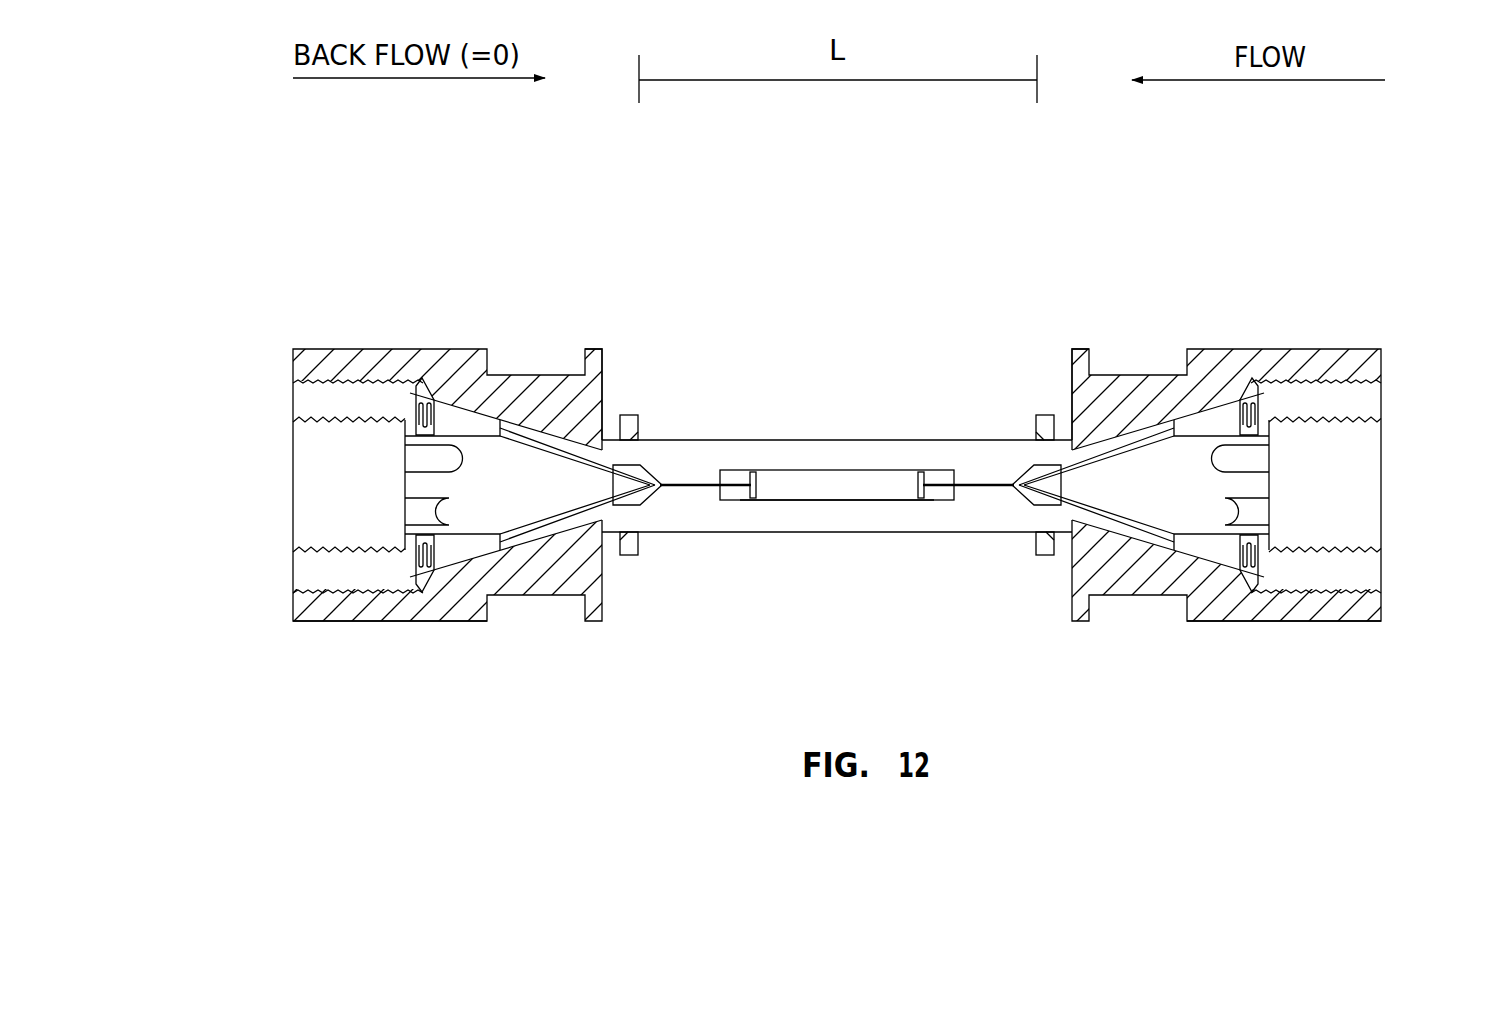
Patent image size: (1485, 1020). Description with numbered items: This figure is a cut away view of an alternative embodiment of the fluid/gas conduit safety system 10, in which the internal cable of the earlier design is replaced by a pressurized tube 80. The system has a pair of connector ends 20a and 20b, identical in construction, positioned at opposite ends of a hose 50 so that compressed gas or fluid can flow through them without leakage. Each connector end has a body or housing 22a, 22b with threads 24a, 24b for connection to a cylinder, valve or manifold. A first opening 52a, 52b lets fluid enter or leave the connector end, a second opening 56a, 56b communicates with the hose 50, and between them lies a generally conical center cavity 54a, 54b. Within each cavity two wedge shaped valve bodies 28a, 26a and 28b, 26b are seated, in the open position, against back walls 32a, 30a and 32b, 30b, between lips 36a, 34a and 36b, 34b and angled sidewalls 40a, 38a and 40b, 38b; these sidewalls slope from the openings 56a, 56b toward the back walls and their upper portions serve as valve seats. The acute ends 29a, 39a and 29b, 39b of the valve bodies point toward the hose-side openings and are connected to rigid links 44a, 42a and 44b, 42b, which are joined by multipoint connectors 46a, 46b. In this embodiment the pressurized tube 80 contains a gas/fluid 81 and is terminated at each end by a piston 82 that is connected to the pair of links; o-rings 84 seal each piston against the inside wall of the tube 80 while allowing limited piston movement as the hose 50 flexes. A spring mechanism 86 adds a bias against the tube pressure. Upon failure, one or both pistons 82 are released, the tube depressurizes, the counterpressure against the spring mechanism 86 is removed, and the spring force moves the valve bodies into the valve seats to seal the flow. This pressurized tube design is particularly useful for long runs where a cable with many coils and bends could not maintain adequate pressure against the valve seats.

The fluid/gas conduit safety system 10 is at (255, 254).
The connector end 20a is at (1381, 621).
The connector end 20b is at (293, 621).
The body or housing 22a is at (1334, 621).
The body or housing 22b is at (340, 621).
The threads 24a is at (1356, 549).
The threads 24b is at (318, 549).
The wedge shaped valve body 26a is at (1254, 585).
The wedge shaped valve body 26b is at (420, 585).
The wedge shaped valve body 28a is at (1227, 399).
The wedge shaped valve body 28b is at (447, 399).
The acute end of valve body 29a is at (1154, 482).
The acute end of valve body 29b is at (520, 482).
The back wall 30a is at (1258, 575).
The back wall 30b is at (416, 575).
The back wall 32a is at (1258, 398).
The back wall 32b is at (416, 398).
The lip 34a is at (1266, 523).
The lip 34b is at (408, 523).
The lip 36a is at (1266, 448).
The lip 36b is at (408, 448).
The angled sidewall 38a is at (1202, 562).
The angled sidewall 38b is at (472, 562).
The acute end of valve body 39a is at (1174, 558).
The acute end of valve body 39b is at (500, 558).
The angled sidewall 40a is at (1254, 385).
The angled sidewall 40b is at (420, 385).
The link 42a is at (1059, 505).
The link 42b is at (615, 505).
The link 44a is at (1070, 390).
The link 44b is at (604, 390).
The multipoint connector 46a is at (1040, 545).
The multipoint connector 46b is at (636, 545).
The fluid/gas conduit or hose 50 is at (822, 470).
The first aperture or opening 52a is at (1382, 484).
The first aperture or opening 52b is at (292, 484).
The center cavity 54a is at (1126, 456).
The center cavity 54b is at (548, 456).
The second aperture or opening 56a is at (1036, 417).
The second aperture or opening 56b is at (640, 417).
The pressurized tube 80 is at (877, 458).
The gas/fluid 81 is at (838, 500).
The piston 82 is at (702, 483).
The o-rings 84 is at (752, 472).
The spring mechanism 86 is at (414, 390).